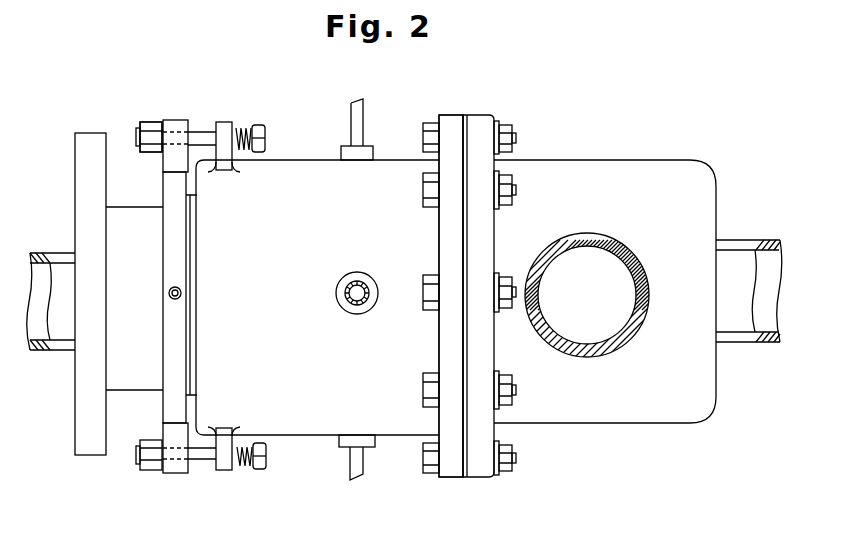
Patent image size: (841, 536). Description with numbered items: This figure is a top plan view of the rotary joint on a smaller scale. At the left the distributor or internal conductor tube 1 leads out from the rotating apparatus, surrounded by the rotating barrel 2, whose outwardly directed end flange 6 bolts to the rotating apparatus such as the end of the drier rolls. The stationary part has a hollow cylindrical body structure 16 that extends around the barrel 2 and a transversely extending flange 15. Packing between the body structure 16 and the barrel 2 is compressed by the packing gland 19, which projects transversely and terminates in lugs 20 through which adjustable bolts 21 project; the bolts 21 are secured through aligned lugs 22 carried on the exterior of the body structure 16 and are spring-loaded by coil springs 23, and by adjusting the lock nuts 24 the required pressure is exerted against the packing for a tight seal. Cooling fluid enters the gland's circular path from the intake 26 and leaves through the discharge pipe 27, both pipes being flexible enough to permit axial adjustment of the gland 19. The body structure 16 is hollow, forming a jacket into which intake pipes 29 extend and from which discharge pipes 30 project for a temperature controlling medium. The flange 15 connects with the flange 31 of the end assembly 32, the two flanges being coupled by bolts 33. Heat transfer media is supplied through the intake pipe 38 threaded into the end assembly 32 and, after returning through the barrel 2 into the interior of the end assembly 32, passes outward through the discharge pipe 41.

The distributor or internal conductor tube 1 is at (60, 338).
The barrel 2 is at (137, 378).
The end flange 6 is at (97, 355).
The flange 15 is at (445, 337).
The hollow cylindrical body structure 16 is at (376, 258).
The packing gland 19 is at (169, 190).
The lugs 20 is at (177, 123).
The adjustable bolts 21 is at (201, 140).
The aligned lugs 22 is at (231, 129).
The coil springs 23 is at (240, 159).
The lock nuts 24 is at (157, 462).
The intake pipe 26 is at (182, 294).
The discharge pipe 27 is at (158, 125).
The intake pipes 29 is at (357, 122).
The discharge pipes 30 is at (360, 466).
The flange 31 is at (481, 263).
The end assembly 32 is at (679, 411).
The bolts 33 is at (511, 192).
The intake pipe 38 is at (738, 345).
The discharge pipe 41 is at (642, 269).